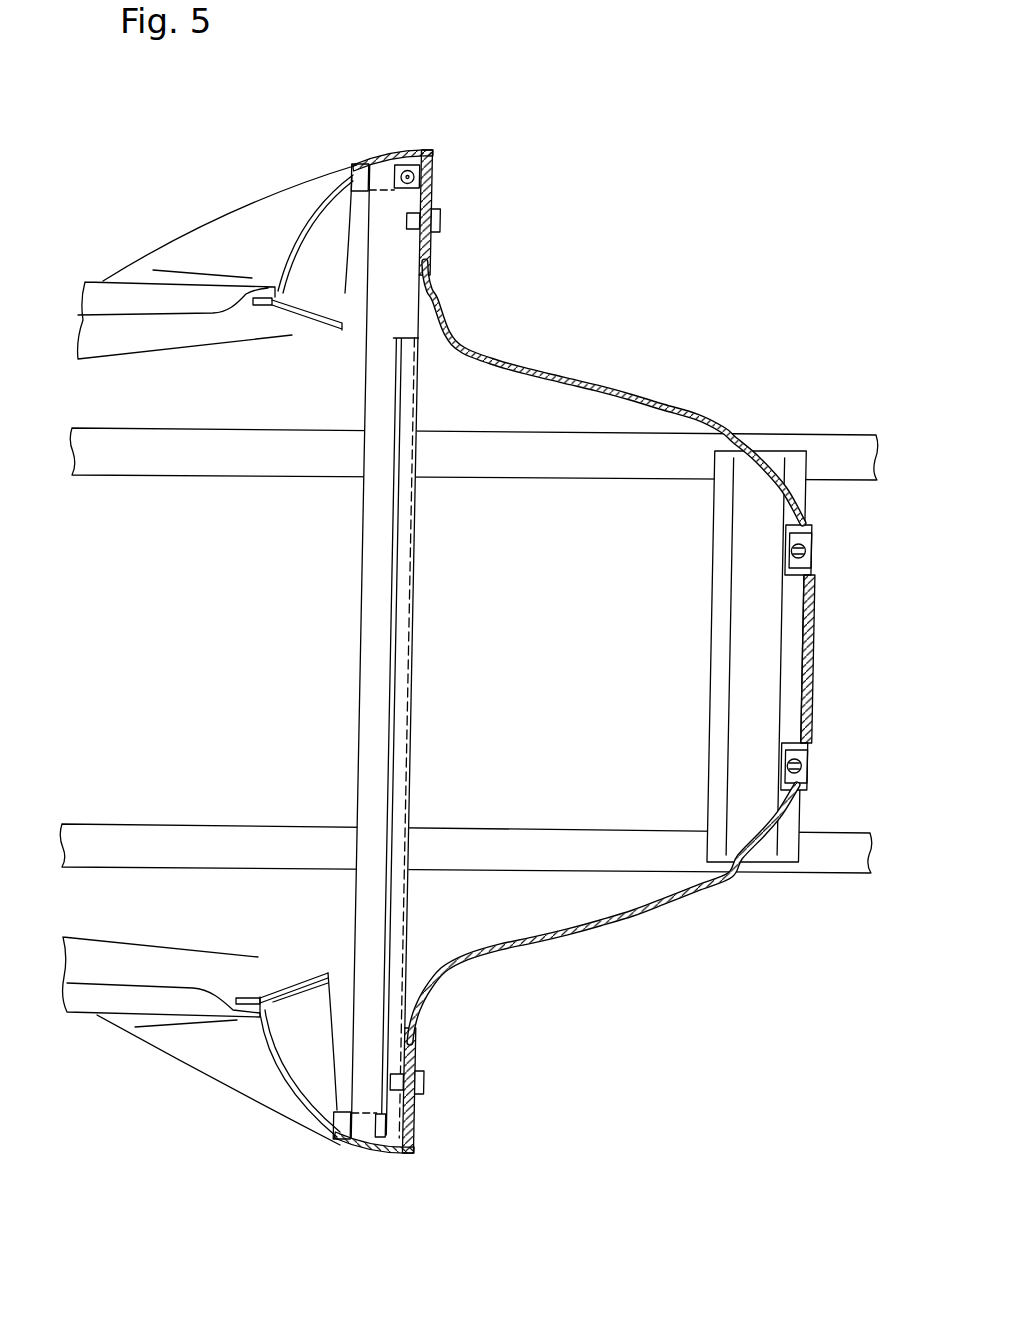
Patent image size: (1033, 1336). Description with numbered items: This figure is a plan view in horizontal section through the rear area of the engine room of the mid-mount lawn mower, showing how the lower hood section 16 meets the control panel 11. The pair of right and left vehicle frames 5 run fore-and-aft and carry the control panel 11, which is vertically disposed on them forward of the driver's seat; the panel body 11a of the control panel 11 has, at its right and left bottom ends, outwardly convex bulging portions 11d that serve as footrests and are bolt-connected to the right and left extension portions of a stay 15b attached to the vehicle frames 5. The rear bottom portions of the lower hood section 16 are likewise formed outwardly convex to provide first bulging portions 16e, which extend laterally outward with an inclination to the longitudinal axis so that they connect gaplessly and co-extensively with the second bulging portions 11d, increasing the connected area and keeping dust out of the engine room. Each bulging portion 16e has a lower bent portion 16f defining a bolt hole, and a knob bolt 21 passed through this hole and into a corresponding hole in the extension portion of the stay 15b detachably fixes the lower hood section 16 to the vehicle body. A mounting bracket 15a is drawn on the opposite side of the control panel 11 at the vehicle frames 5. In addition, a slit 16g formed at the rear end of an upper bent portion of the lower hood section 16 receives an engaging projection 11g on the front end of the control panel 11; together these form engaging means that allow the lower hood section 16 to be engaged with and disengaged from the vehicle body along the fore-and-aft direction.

The vehicle frame 5 is at (837, 447).
The control panel 11 is at (603, 378).
The panel body 11a is at (823, 650).
The bulging portion 11d is at (433, 180).
The engaging projection 11g is at (272, 306).
The bracket 15a is at (727, 645).
The stay 15b is at (418, 613).
The lower hood section 16 is at (105, 278).
The bulging portion 16e is at (250, 230).
The lower bent portion 16f is at (362, 177).
The slit 16g is at (255, 307).
The knob bolt 21 is at (407, 177).